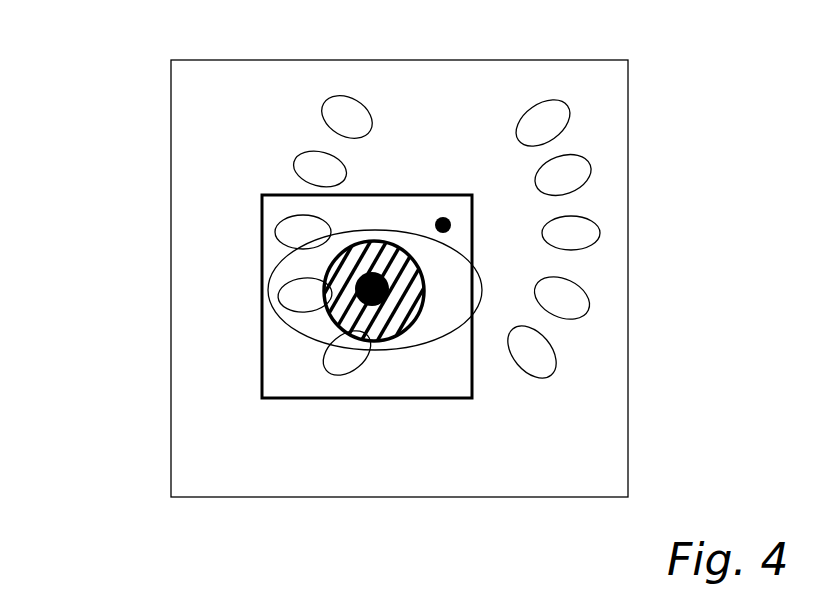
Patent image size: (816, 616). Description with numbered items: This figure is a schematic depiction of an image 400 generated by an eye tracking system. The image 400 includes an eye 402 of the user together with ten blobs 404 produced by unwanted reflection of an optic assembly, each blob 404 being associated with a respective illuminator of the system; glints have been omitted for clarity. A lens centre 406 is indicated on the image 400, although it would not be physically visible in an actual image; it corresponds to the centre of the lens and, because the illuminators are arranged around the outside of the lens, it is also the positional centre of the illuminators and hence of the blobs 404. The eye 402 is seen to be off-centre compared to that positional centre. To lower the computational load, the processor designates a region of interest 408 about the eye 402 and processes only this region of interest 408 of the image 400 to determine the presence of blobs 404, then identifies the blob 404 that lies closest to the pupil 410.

The image 400 is at (165, 77).
The eye 402 is at (443, 337).
The blobs 404 is at (307, 112).
The lens centre 406 is at (445, 210).
The region of interest (ROI) 408 is at (387, 401).
The pupil 410 is at (352, 304).